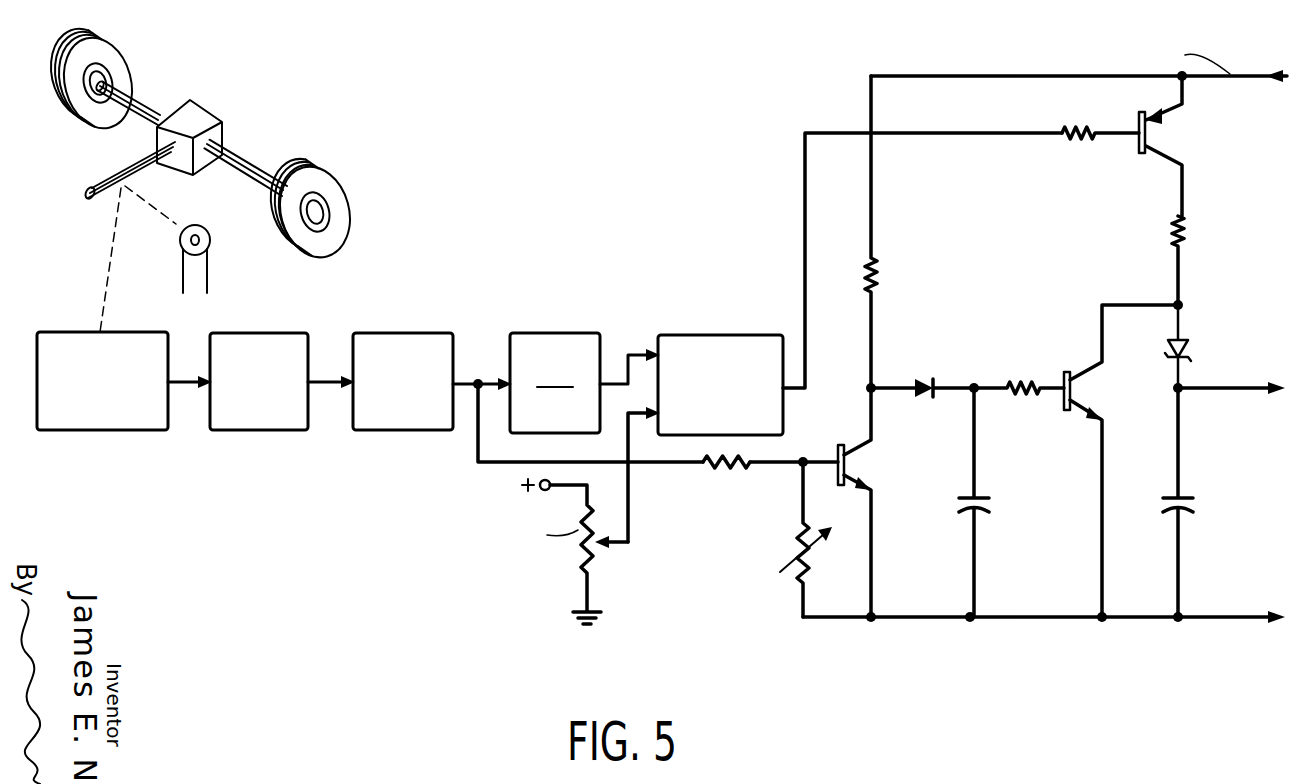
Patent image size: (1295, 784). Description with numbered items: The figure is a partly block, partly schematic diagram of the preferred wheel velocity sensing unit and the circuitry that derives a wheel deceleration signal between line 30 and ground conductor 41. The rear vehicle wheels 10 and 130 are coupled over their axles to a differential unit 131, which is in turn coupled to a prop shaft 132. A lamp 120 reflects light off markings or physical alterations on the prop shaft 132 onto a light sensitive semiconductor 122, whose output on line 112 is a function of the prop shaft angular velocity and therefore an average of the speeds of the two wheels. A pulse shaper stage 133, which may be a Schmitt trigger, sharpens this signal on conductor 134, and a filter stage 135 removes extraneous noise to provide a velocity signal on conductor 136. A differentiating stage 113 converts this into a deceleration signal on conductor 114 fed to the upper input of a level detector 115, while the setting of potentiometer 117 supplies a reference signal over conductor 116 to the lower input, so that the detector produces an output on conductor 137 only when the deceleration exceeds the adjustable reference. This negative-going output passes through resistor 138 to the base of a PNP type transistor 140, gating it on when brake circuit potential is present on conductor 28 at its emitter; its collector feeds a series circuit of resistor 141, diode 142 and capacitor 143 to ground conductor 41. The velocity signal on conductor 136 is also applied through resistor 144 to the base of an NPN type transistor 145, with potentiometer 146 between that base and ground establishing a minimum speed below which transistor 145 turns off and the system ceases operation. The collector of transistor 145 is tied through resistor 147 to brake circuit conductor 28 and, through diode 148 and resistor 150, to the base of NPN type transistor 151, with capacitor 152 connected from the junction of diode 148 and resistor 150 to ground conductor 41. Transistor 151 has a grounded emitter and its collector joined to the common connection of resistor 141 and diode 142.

The rear vehicle wheel 10 is at (133, 57).
The rear vehicle wheel 130 is at (315, 147).
The differential unit 131 is at (208, 110).
The prop shaft 132 is at (133, 167).
The lamp 120 is at (207, 245).
The light sensitive semiconductor 122 is at (102, 369).
The line 112 is at (182, 387).
The pulse shaper stage 133 is at (259, 369).
The conductor 134 is at (322, 387).
The filter stage 135 is at (403, 369).
The conductor 136 is at (465, 387).
The differentiating stage 113 is at (555, 371).
The conductor 114 is at (628, 350).
The level detector 115 is at (720, 372).
The conductor 116 is at (633, 498).
The potentiometer 117 is at (597, 565).
The resistor 144 is at (730, 478).
The potentiometer 146 is at (793, 537).
The NPN type transistor 145 is at (854, 502).
The ground conductor 41 is at (1215, 620).
The conductor 137 is at (805, 243).
The resistor 147 is at (897, 234).
The brake circuit conductor 28 is at (945, 74).
The resistor 138 is at (1096, 120).
The PNP type transistor 140 is at (1175, 146).
The resistor 141 is at (1201, 263).
The diode 142 is at (1199, 346).
The line 30 is at (1233, 393).
The capacitor 143 is at (1201, 502).
The diode 148 is at (922, 376).
The capacitor 152 is at (995, 500).
The resistor 150 is at (1019, 374).
The NPN type transistor 151 is at (1121, 461).